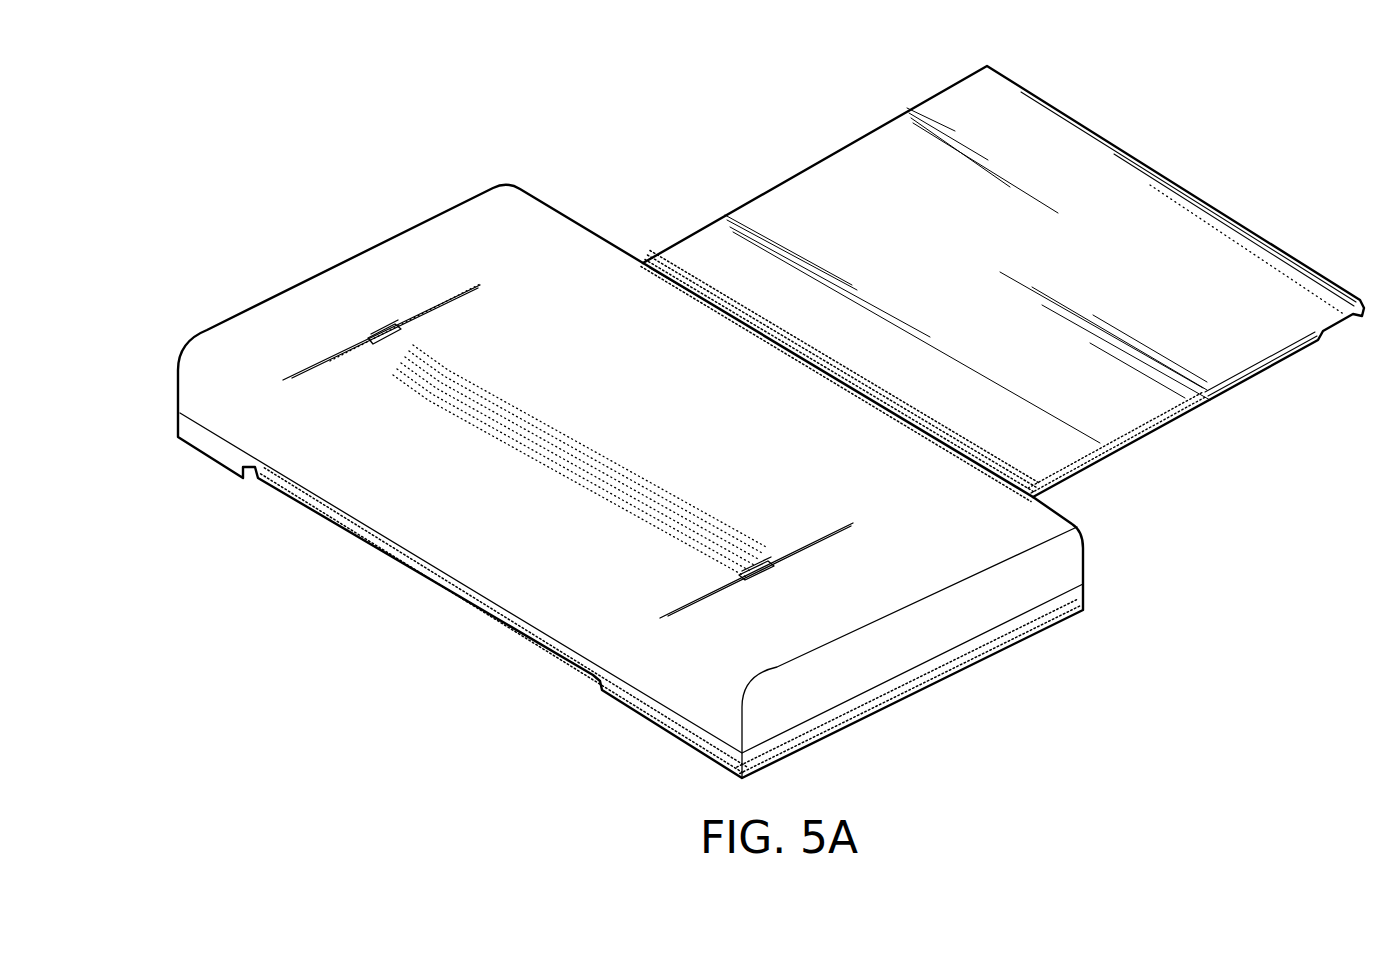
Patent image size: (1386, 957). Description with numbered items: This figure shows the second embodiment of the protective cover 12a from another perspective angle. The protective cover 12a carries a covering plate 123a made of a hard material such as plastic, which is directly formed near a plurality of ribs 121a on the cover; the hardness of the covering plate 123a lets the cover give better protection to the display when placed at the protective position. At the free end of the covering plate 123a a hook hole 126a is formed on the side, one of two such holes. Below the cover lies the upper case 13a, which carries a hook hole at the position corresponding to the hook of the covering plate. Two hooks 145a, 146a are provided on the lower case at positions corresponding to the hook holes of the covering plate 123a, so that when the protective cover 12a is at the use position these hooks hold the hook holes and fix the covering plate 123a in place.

The protective cover 12a is at (803, 153).
The upper case 13a is at (980, 648).
The ribs 121a is at (700, 260).
The covering plate 123a is at (1025, 140).
The hook hole 126a is at (1263, 360).
The hook 145a is at (381, 323).
The hook 146a is at (767, 565).